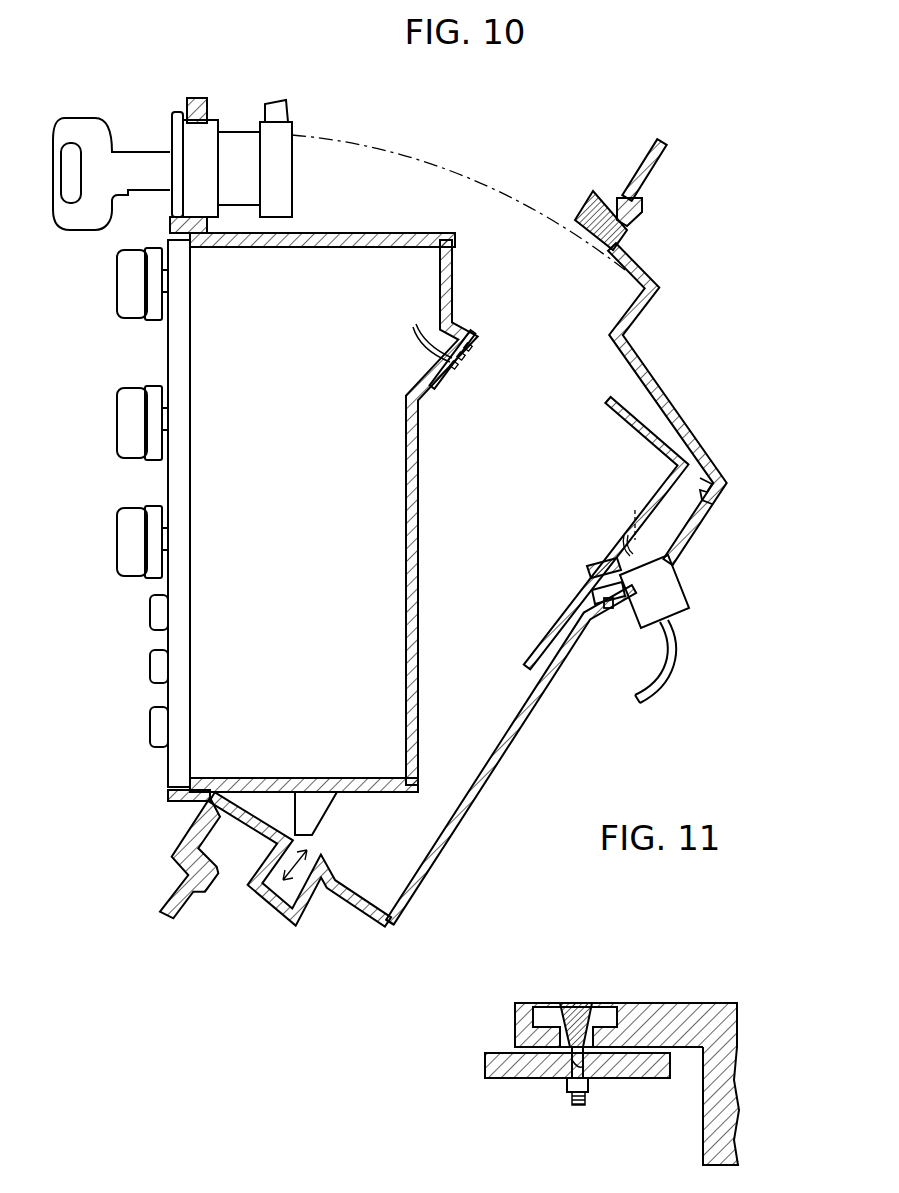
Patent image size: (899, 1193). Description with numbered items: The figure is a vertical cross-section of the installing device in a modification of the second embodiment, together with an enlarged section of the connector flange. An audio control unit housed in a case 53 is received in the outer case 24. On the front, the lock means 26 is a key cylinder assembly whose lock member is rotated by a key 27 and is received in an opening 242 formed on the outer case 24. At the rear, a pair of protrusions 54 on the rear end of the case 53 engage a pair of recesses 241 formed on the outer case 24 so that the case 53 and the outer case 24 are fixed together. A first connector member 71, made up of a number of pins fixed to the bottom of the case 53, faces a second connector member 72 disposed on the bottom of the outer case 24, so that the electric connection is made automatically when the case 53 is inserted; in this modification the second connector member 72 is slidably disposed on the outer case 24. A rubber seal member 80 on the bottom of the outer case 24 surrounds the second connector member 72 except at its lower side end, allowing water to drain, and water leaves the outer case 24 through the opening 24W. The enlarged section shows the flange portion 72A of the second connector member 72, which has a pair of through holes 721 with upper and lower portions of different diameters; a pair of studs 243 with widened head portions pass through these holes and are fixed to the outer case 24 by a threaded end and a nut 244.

In FIG. 10, the key 27 is at (95, 120).
In FIG. 10, the lock means 26 is at (215, 128).
In FIG. 10, the case 53 is at (376, 235).
In FIG. 10, the protrusions 54 is at (317, 815).
In FIG. 10, the first connector member 71 is at (443, 377).
In FIG. 10, the outer case 24 is at (667, 393).
In FIG. 11, the outer case 24 is at (658, 1078).
In FIG. 10, the recesses 241 is at (292, 908).
In FIG. 10, the opening 24W is at (389, 927).
In FIG. 10, the seal member 80 is at (712, 482).
In FIG. 10, the flange portion 72A is at (597, 566).
In FIG. 11, the flange portion 72A is at (665, 1005).
In FIG. 10, the second connector member 72 is at (667, 588).
In FIG. 11, the second connector member 72 is at (730, 1088).
In FIG. 10, the nut 244 is at (614, 610).
In FIG. 11, the nut 244 is at (563, 1083).
In FIG. 11, the through holes 721 is at (560, 1020).
In FIG. 11, the studs 243 is at (590, 1003).
In FIG. 11, the opening 242 is at (583, 1067).